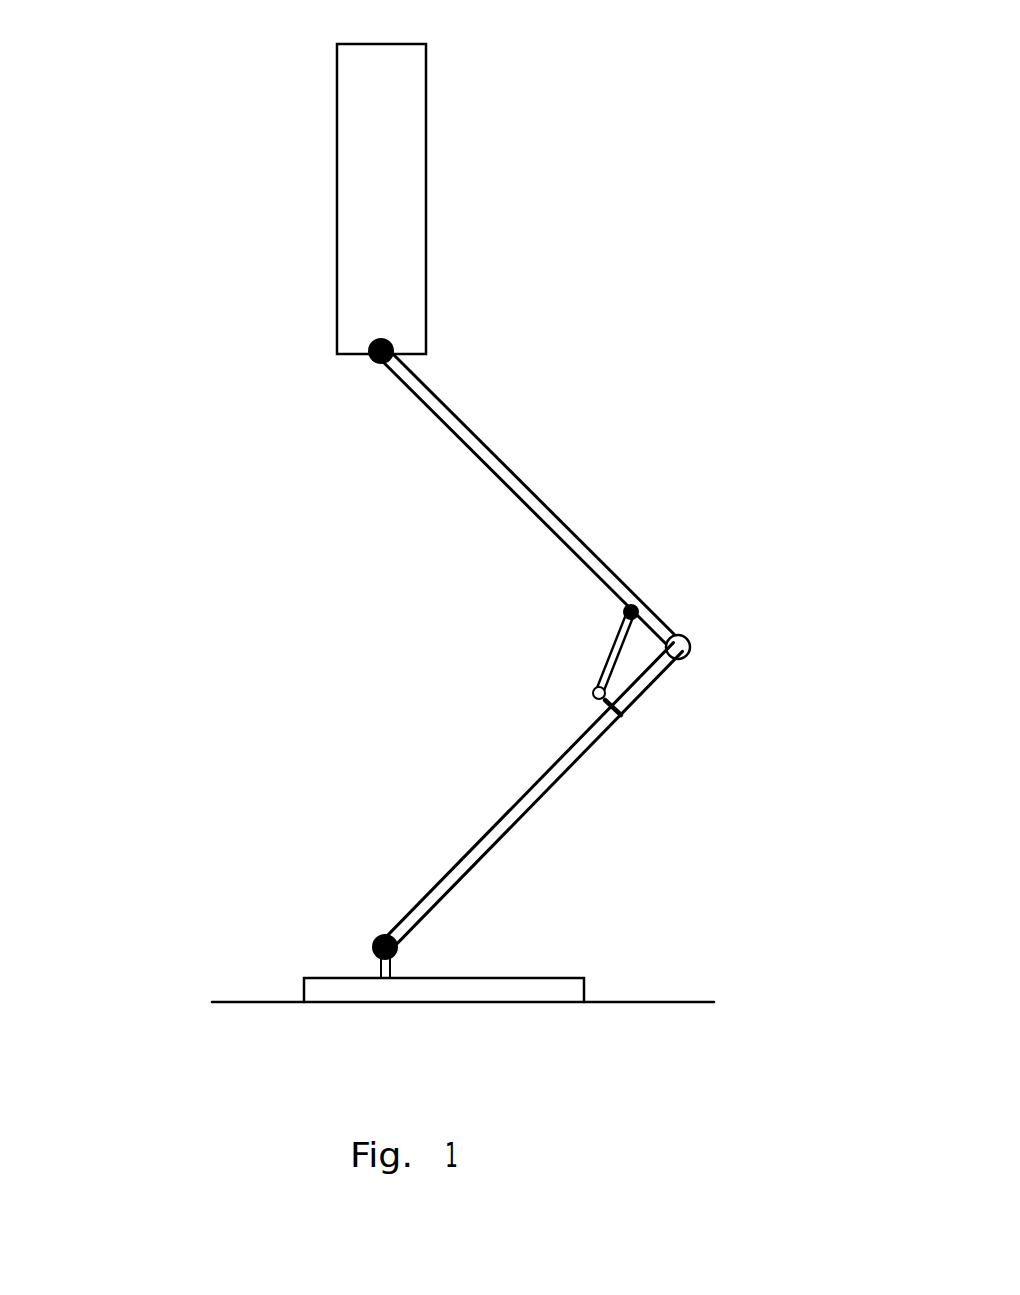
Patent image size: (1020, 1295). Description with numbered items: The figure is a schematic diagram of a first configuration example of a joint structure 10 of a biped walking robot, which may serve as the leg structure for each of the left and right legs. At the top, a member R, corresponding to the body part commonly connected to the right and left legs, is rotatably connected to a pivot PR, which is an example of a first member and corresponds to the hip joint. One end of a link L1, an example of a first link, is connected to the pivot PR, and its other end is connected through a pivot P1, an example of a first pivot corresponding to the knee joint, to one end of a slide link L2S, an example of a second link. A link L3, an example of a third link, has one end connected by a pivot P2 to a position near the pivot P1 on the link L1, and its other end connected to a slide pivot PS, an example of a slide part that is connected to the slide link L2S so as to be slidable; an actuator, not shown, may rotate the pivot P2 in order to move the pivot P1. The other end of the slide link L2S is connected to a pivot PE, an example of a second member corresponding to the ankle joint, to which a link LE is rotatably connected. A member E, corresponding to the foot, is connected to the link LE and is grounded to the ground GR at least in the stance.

The joint structure 10 is at (198, 112).
The member R is at (409, 123).
The pivot PR is at (373, 358).
The link L1 is at (540, 512).
The pivot P1 is at (690, 645).
The pivot P2 is at (620, 610).
The link L3 is at (613, 660).
The slide pivot PS is at (592, 698).
The slide link L2S is at (487, 844).
The pivot PE is at (370, 945).
The link LE is at (378, 970).
The member E is at (552, 987).
The ground GR is at (689, 1001).